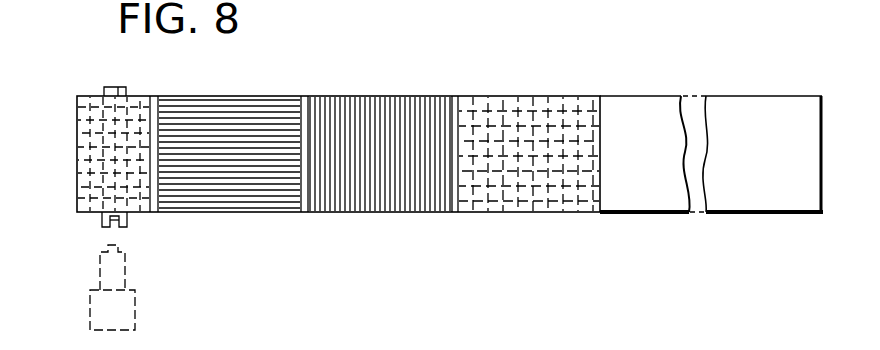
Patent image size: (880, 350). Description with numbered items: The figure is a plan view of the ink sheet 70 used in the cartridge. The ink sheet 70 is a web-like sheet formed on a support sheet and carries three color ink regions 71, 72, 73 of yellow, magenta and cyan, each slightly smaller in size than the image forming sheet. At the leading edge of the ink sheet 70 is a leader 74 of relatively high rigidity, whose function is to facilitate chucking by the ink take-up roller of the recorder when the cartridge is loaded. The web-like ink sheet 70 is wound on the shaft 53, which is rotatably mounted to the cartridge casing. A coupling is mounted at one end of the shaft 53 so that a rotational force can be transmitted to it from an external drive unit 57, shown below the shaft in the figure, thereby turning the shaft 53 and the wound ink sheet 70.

The ink sheet 70 is at (466, 86).
The shaft 53 is at (118, 86).
The color ink region 73 is at (223, 180).
The color ink region 72 is at (375, 180).
The color ink region 71 is at (519, 187).
The leader 74 is at (767, 195).
The external drive unit 57 is at (135, 308).